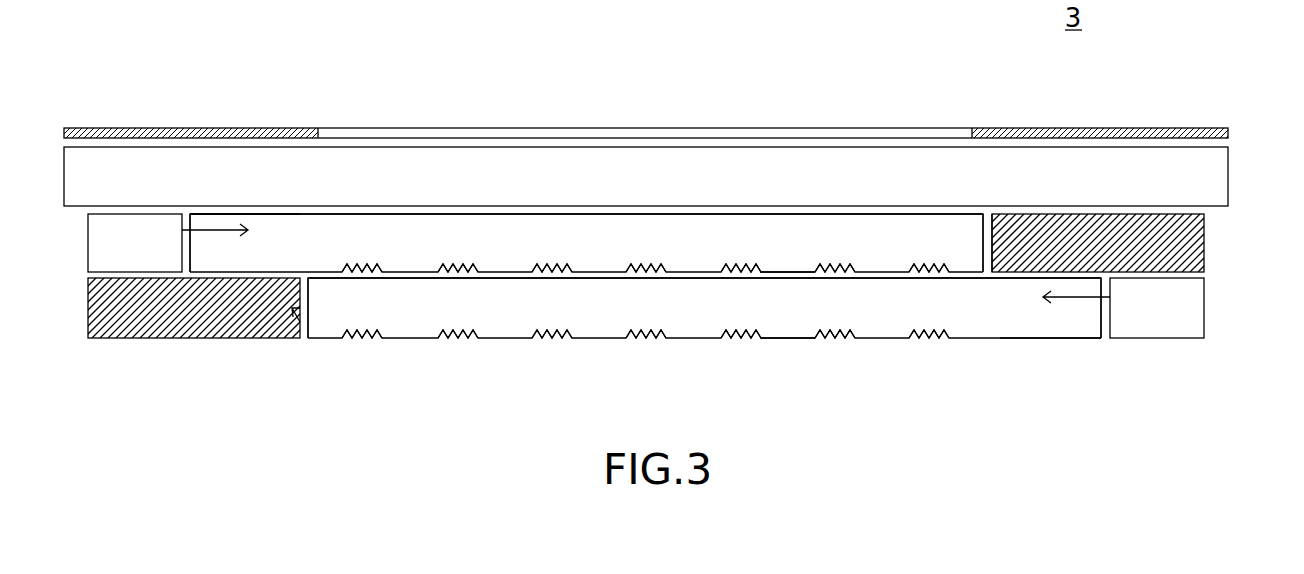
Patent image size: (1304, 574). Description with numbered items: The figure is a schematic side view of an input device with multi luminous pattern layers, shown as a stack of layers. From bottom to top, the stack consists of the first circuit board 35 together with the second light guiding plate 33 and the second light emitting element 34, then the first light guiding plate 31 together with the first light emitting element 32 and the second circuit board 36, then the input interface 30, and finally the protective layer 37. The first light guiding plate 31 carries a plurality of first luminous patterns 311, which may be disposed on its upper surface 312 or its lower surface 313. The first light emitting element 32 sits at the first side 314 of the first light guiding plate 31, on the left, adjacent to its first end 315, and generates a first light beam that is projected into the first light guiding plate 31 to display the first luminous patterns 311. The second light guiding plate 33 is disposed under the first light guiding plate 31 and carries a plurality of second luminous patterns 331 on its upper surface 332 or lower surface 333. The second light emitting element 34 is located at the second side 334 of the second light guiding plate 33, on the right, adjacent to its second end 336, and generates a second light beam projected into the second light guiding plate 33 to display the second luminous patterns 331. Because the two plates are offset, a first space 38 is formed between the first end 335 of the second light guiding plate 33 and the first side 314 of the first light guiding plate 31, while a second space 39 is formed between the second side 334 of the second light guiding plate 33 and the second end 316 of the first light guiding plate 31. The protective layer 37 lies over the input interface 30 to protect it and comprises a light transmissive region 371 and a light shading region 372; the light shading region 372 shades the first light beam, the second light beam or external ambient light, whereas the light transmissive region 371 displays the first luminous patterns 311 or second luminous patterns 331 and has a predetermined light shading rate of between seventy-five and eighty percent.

The input interface 30 is at (1218, 186).
The first light guiding plate 31 is at (544, 228).
The first luminous patterns 311 is at (559, 264).
The upper surface of first light guiding plate 312 is at (697, 213).
The lower surface of first light guiding plate 313 is at (787, 271).
The first side of first light guiding plate 314 is at (257, 255).
The first end of first light guiding plate 315 is at (107, 297).
The second end of first light guiding plate 316 is at (981, 220).
The first light emitting element 32 is at (100, 253).
The second light guiding plate 33 is at (976, 330).
The second luminous patterns 331 is at (562, 335).
The upper surface of second light guiding plate 332 is at (793, 281).
The lower surface of second light guiding plate 333 is at (790, 338).
The second side of second light guiding plate 334 is at (1058, 327).
The first end of second light guiding plate 335 is at (310, 317).
The second end of second light guiding plate 336 is at (1101, 316).
The second light emitting element 34 is at (1192, 318).
The first circuit board 35 is at (100, 300).
The second circuit board 36 is at (1192, 248).
The protective layer 37 is at (645, 90).
The light transmissive region 371 is at (625, 109).
The light shading region 372 is at (172, 128).
The first space 38 is at (300, 322).
The second space 39 is at (995, 229).